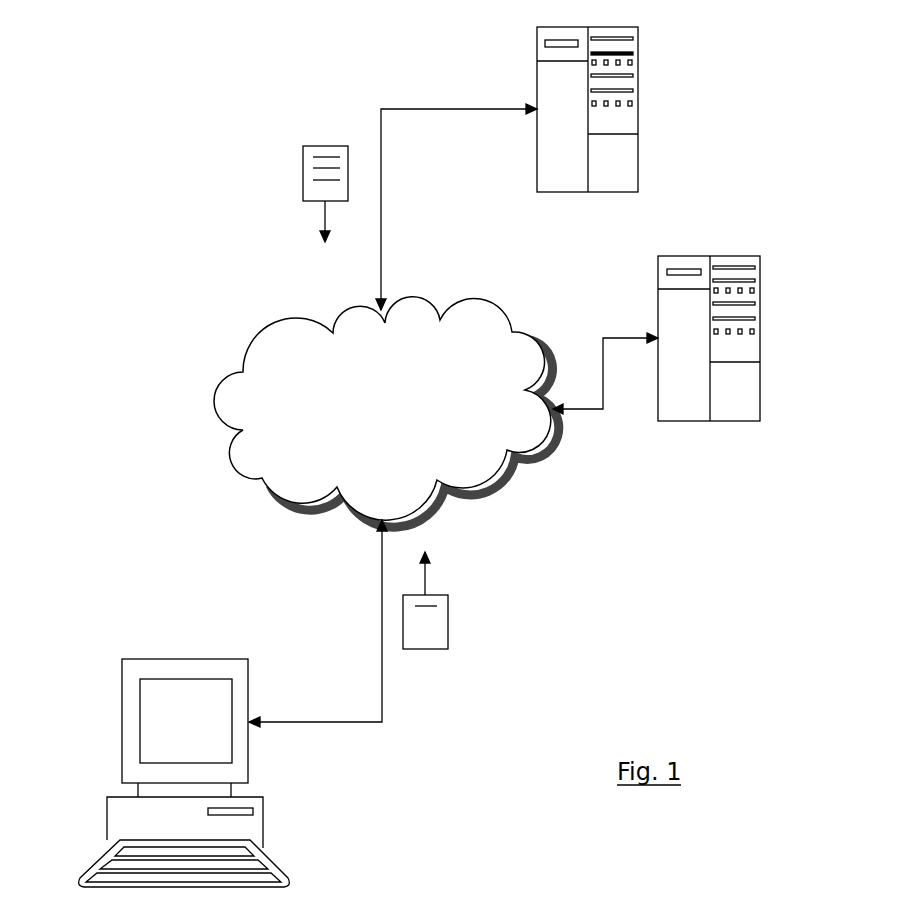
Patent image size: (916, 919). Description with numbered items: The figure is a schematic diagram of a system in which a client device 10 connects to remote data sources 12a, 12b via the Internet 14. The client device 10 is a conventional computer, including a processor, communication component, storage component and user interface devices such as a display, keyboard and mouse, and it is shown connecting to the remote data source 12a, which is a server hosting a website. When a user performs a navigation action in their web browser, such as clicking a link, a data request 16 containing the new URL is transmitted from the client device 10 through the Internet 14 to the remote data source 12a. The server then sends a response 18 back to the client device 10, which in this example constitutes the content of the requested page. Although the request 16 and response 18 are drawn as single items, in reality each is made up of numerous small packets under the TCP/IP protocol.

The client device 10 is at (122, 703).
The remote data source 12a is at (638, 60).
The remote data source 12b is at (760, 298).
The Internet 14 is at (215, 405).
The data request 16 is at (448, 616).
The response 18 is at (303, 180).